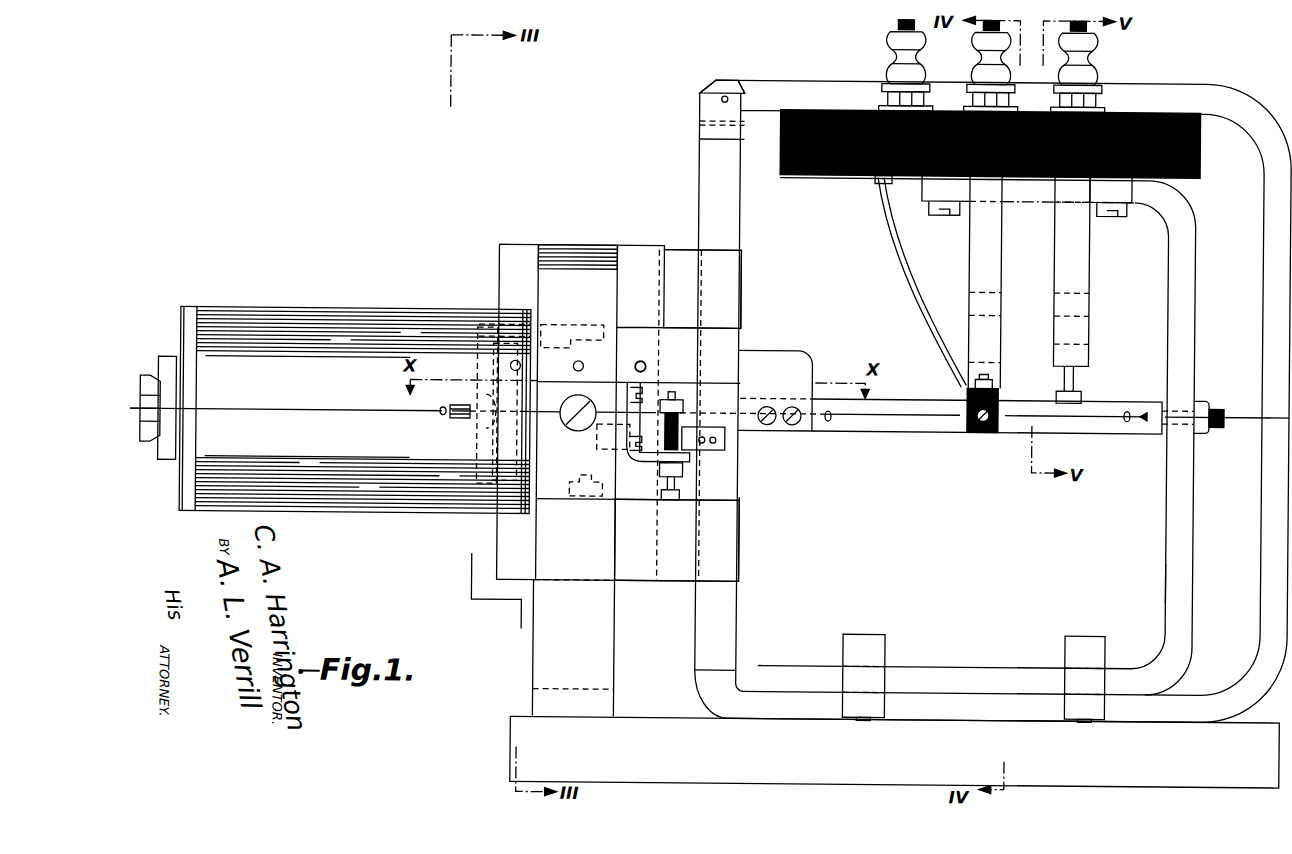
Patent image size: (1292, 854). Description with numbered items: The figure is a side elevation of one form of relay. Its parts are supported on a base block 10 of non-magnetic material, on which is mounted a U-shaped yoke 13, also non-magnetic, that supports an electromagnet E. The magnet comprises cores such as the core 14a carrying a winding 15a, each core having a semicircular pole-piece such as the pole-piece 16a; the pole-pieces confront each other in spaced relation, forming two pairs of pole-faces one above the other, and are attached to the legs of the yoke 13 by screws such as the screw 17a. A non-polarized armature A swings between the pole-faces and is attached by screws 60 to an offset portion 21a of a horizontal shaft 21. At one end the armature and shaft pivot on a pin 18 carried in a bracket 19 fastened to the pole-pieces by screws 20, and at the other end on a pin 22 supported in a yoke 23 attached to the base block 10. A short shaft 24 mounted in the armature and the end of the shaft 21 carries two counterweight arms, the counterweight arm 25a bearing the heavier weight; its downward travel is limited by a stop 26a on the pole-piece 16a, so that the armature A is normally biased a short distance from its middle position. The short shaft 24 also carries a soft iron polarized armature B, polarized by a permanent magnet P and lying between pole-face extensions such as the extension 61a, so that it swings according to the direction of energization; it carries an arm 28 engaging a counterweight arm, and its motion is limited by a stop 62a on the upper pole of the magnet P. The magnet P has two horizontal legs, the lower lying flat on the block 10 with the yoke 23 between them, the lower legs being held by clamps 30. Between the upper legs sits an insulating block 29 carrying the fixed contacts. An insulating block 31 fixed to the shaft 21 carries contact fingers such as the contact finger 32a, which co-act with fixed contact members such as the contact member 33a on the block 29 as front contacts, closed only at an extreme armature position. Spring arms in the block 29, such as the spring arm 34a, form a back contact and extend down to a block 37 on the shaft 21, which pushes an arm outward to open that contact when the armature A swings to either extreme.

The electromagnet E is at (296, 290).
The non-polarized armature A is at (496, 268).
The polarized armature B is at (697, 184).
The permanent magnet P is at (1262, 296).
The base block 10 is at (1222, 783).
The U-shaped yoke 13 is at (532, 650).
The core 14a is at (132, 412).
The winding 15a is at (308, 407).
The pole-piece 16a is at (540, 258).
The screw 17a is at (581, 433).
The pin 18 is at (508, 418).
The bracket 19 is at (495, 345).
The screws 20 is at (598, 335).
The horizontal shaft 21 is at (880, 431).
The offset portion 21a is at (752, 352).
The pin 22 is at (1147, 426).
The yoke 23 is at (1167, 537).
The short shaft 24 is at (738, 428).
The counterweight arm 25a is at (690, 371).
The stop 26a is at (645, 464).
The arm 28 is at (712, 452).
The block 29 is at (1197, 165).
The clamps 30 is at (866, 633).
The block 31 is at (965, 428).
The contact finger 32a is at (962, 345).
The fixed contact member 33a is at (968, 250).
The spring arm 34a is at (1088, 279).
The block 37 is at (1073, 343).
The screws 60 is at (641, 362).
The extension 61a is at (672, 252).
The stop 62a is at (708, 139).